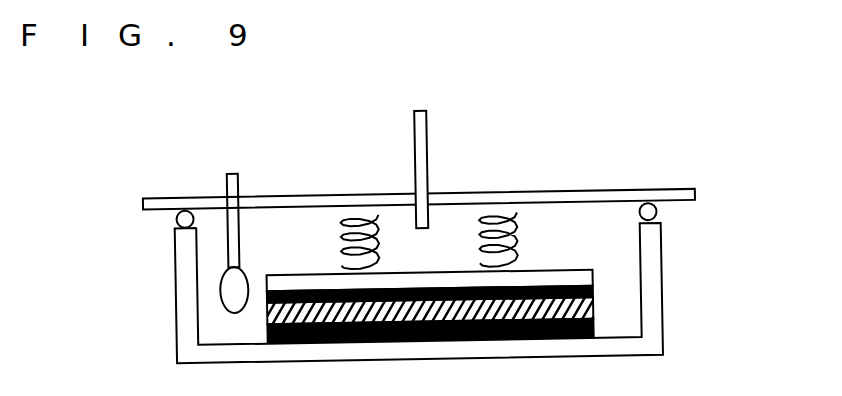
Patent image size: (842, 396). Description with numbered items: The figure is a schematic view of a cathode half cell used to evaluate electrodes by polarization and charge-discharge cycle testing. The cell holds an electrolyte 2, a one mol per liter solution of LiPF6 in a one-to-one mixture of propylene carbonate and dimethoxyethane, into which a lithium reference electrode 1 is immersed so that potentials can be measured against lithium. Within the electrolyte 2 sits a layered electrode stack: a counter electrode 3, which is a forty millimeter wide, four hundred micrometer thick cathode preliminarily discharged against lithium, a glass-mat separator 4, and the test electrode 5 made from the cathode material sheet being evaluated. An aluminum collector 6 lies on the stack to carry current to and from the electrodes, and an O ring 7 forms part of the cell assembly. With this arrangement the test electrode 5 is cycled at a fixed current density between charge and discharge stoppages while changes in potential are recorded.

The reference electrode 1 is at (200, 295).
The electrolyte 2 is at (210, 336).
The counter electrode 3 is at (605, 291).
The separator 4 is at (605, 310).
The test electrode 5 is at (605, 330).
The collector 6 is at (605, 276).
The O ring 7 is at (670, 209).